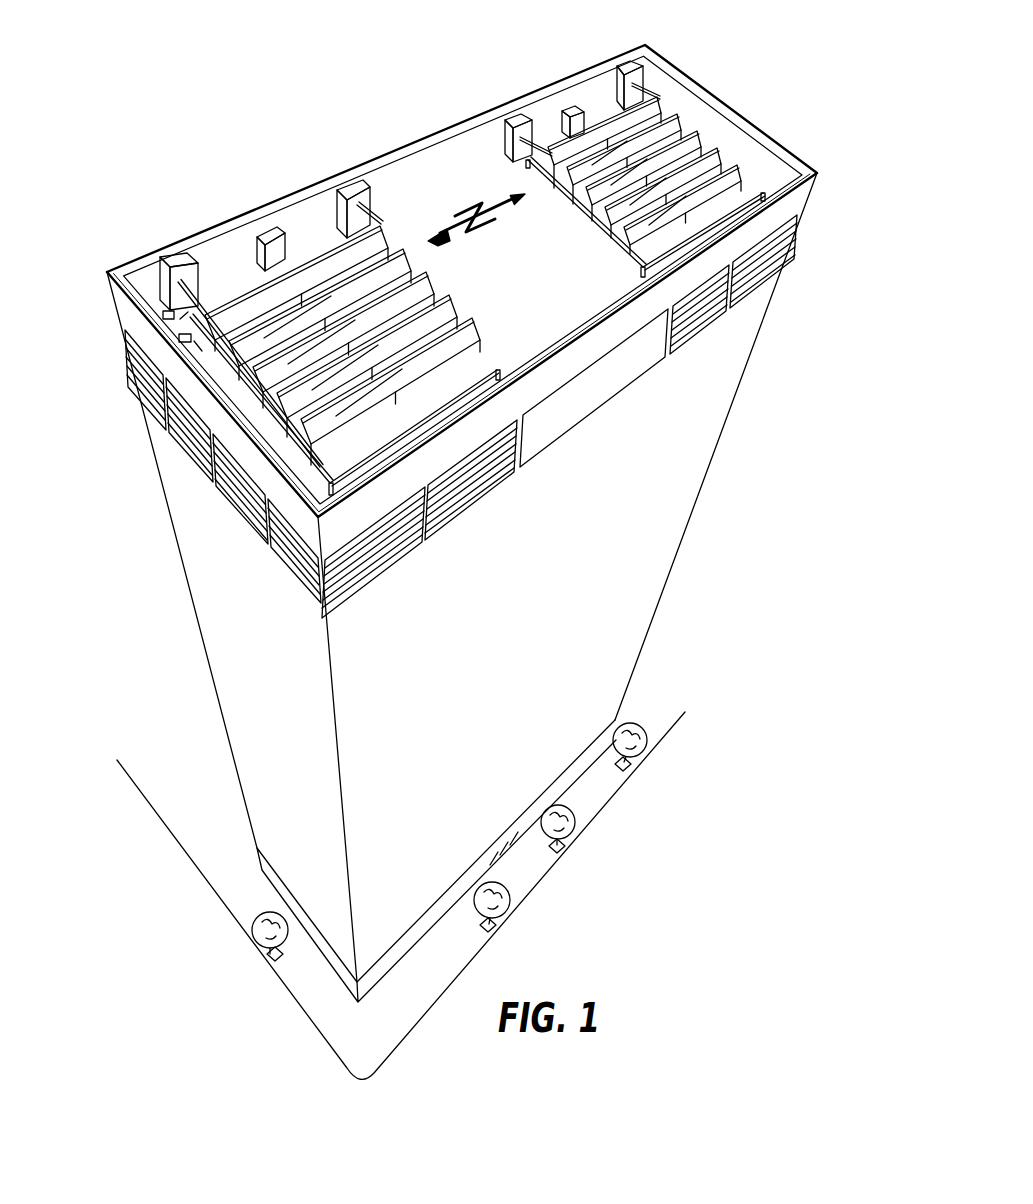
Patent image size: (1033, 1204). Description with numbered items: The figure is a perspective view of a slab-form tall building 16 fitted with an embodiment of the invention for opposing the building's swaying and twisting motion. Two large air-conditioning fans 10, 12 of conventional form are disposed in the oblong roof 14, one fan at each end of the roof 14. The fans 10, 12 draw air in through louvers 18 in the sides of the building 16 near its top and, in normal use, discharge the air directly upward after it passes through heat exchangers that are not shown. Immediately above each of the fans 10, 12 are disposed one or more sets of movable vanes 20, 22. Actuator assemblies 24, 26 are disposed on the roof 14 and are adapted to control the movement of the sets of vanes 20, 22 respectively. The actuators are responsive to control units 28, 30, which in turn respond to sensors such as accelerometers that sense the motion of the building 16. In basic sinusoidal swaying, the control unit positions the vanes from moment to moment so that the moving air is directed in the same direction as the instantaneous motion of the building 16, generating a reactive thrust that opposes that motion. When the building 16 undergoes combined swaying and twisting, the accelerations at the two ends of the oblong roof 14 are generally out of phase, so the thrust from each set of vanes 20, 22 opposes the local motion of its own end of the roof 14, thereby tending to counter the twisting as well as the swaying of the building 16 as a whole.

The air-conditioning fan 10 is at (437, 357).
The air-conditioning fan 12 is at (592, 186).
The roof 14 is at (554, 286).
The tall building 16 is at (727, 404).
The louvers 18 is at (768, 279).
The set of movable vanes 20 is at (339, 304).
The set of movable vanes 22 is at (642, 138).
The actuator assembly 24 is at (176, 262).
The actuator assembly 26 is at (512, 117).
The control unit 28 is at (264, 237).
The control unit 30 is at (572, 108).